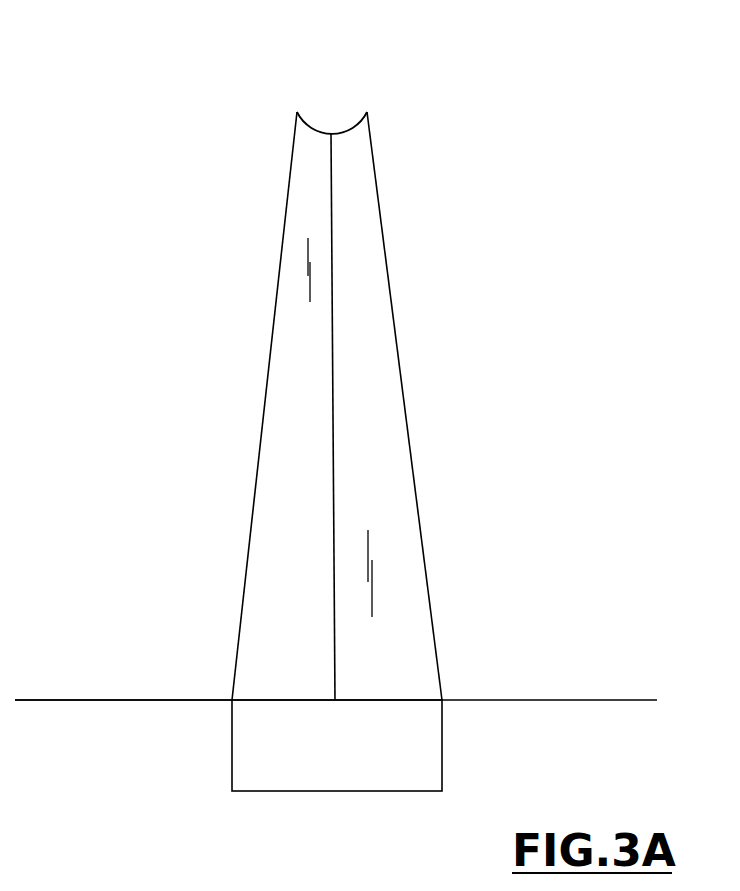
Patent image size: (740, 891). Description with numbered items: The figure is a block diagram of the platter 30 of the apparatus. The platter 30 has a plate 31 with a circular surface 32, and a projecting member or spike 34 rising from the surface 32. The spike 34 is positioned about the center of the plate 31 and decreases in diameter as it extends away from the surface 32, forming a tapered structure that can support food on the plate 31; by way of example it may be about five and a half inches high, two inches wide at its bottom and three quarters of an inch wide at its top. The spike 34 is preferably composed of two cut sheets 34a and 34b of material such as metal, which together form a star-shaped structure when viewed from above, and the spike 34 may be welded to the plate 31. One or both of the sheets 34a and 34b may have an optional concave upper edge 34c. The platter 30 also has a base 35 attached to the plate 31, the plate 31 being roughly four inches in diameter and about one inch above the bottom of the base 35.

The platter 30 is at (343, 20).
The plate 31 is at (657, 698).
The circular surface 32 is at (95, 700).
The spike 34 is at (407, 412).
The cut sheet 34a is at (271, 337).
The cut sheet 34b is at (333, 470).
The concave upper edge 34c is at (318, 130).
The base 35 is at (232, 759).